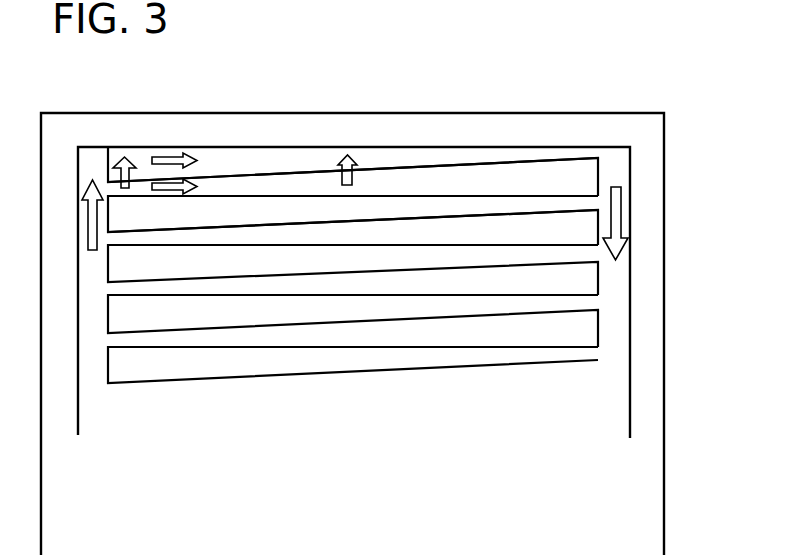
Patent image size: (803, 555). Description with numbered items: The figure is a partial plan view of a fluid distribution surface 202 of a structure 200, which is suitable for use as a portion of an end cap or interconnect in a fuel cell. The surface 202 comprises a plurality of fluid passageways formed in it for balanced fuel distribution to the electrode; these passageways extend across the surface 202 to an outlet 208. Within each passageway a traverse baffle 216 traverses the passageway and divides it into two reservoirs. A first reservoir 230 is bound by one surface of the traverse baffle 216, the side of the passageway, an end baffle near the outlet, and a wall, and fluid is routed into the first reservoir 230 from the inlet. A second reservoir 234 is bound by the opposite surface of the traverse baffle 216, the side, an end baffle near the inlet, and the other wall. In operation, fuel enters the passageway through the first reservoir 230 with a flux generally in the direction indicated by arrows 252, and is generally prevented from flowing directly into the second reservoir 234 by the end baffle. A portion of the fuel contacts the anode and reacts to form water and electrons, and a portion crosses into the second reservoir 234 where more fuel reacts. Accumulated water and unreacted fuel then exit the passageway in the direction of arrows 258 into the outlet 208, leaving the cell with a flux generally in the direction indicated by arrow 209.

The structure 200 is at (397, 304).
The fluid distribution surface 202 is at (460, 137).
The outlet 208 is at (617, 295).
The arrow 209 is at (615, 217).
The traverse baffle 216 is at (290, 185).
The first reservoir 230 is at (250, 223).
The second reservoir 234 is at (252, 172).
The arrows 252 is at (148, 181).
The arrows 258 is at (169, 155).